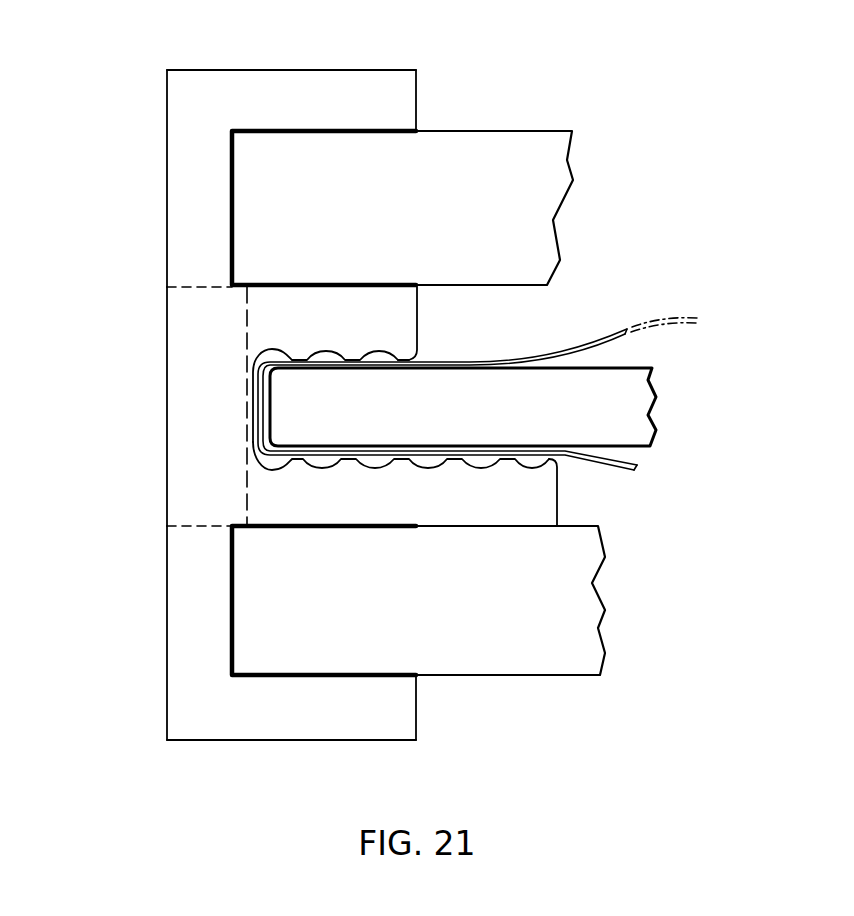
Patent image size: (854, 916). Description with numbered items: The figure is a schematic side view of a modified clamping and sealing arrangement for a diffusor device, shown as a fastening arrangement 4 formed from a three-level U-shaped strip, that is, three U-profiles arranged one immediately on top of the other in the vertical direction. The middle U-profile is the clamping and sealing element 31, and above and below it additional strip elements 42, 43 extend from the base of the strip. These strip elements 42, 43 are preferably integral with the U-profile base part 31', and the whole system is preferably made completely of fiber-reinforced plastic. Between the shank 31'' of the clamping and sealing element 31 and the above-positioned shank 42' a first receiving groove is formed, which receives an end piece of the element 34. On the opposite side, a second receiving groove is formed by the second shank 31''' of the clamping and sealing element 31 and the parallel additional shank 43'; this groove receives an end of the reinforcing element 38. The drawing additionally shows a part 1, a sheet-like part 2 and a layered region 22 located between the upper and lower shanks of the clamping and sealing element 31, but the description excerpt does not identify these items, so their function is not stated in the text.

The workpiece strip 1 is at (643, 398).
The sheet 2 is at (611, 325).
The fastening arrangement 4 is at (154, 314).
The corrugated elastic layer 22 is at (352, 357).
The clamping and sealing element 31 is at (360, 406).
The U-profile base part 31' is at (125, 406).
The shank 31'' is at (446, 323).
The second shank 31''' is at (595, 492).
The element 34 is at (503, 120).
The reinforcing element 38 is at (525, 688).
The strip element 42 is at (245, 149).
The shank 42' is at (291, 44).
The strip element 43 is at (245, 664).
The additional shank 43' is at (291, 763).